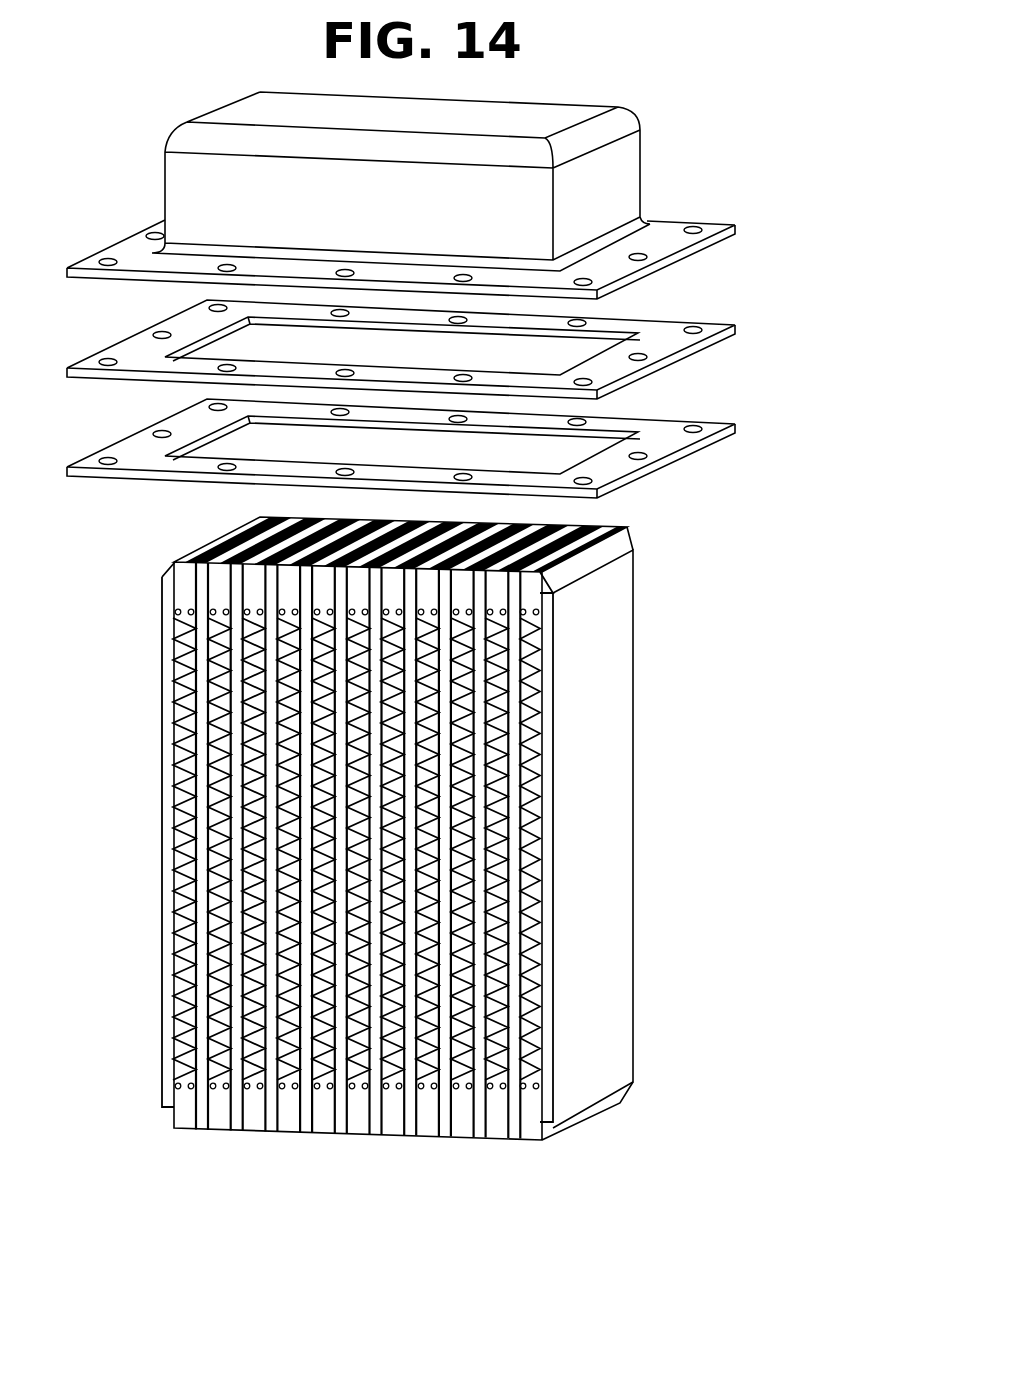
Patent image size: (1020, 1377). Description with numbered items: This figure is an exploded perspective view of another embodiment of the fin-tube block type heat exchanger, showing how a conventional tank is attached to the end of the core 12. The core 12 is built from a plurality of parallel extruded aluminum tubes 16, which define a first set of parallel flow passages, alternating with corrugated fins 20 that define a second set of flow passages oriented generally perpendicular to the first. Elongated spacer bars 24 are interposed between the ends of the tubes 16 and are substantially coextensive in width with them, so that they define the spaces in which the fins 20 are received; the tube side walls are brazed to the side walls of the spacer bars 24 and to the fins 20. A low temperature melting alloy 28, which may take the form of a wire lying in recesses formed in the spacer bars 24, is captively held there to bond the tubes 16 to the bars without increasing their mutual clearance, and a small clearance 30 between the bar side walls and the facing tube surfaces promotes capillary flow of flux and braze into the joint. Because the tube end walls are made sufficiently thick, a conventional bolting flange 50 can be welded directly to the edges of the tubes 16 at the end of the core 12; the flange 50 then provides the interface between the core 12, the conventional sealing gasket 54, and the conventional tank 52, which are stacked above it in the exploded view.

The core 12 is at (126, 715).
The tube 16 is at (198, 1128).
The corrugated fin 20 is at (222, 1000).
The spacer bar 24 is at (222, 570).
The low temperature melting alloy 28 is at (176, 574).
The clearance 30 is at (612, 834).
The bolting flange 50 is at (736, 458).
The tank 52 is at (736, 258).
The sealing gasket 54 is at (736, 355).